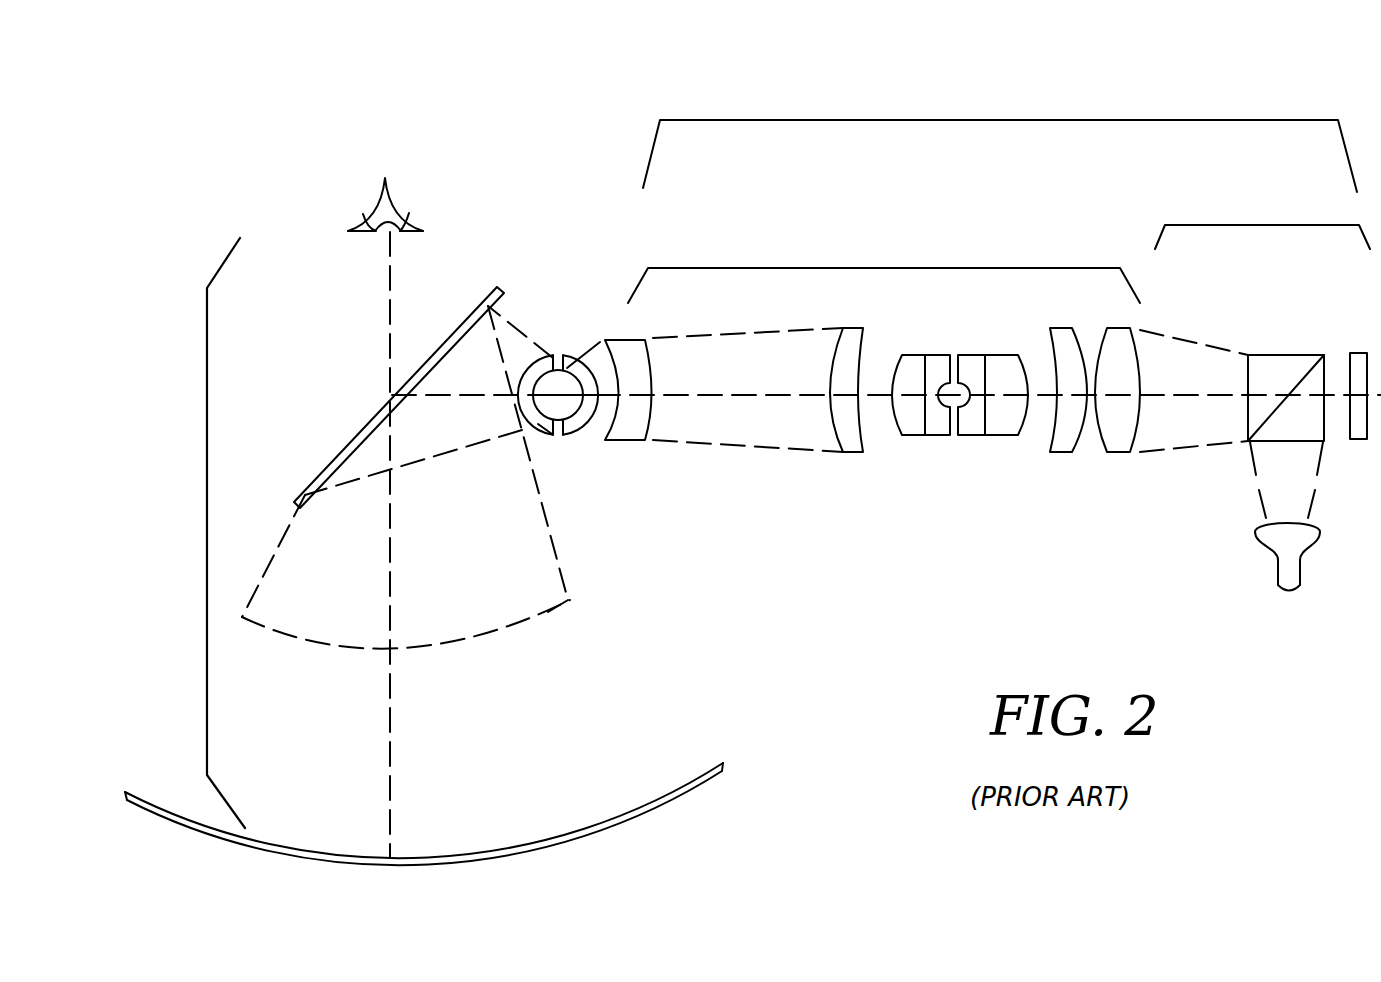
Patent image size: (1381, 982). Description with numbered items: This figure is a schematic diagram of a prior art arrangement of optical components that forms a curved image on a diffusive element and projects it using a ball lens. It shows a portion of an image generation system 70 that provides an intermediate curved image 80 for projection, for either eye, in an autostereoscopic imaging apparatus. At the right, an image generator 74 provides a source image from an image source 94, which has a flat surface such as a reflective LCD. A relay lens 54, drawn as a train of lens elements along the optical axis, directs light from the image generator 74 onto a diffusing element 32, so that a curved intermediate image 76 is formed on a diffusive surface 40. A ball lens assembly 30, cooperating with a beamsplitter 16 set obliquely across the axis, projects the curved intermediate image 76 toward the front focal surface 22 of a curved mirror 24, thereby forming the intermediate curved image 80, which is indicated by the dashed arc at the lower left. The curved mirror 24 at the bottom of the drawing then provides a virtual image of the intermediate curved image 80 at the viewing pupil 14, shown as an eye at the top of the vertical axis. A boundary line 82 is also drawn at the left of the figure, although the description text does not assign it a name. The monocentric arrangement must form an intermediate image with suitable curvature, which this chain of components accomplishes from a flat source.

The viewing pupil 14 is at (352, 232).
The beamsplitter 16 is at (392, 400).
The front focal surface 22 is at (548, 612).
The curved mirror 24 is at (672, 800).
The ball lens assembly 30 is at (520, 362).
The diffusing element 32 is at (653, 427).
The diffusive surface 40 is at (583, 425).
The relay lens 54 is at (882, 268).
The image generation system 70 is at (997, 120).
The image generator 74 is at (1265, 224).
The curved intermediate image 76 is at (577, 424).
The intermediate curved image 80 is at (427, 646).
The housing wall 82 is at (207, 535).
The image source 94 is at (1355, 353).